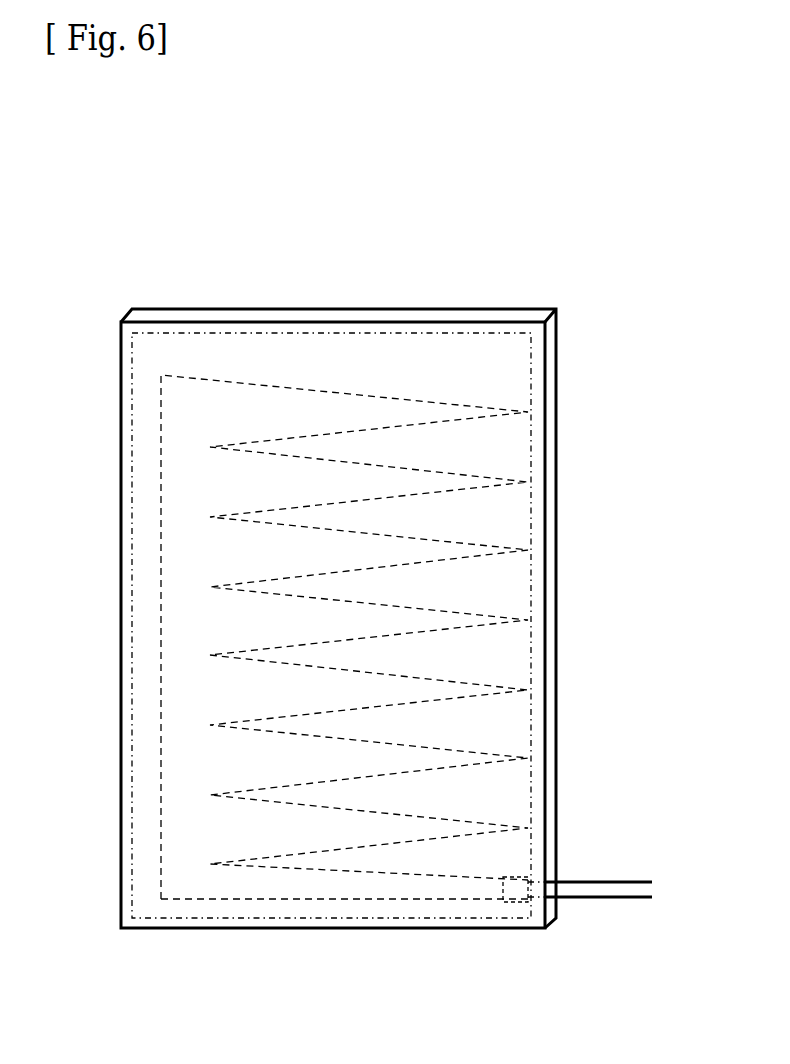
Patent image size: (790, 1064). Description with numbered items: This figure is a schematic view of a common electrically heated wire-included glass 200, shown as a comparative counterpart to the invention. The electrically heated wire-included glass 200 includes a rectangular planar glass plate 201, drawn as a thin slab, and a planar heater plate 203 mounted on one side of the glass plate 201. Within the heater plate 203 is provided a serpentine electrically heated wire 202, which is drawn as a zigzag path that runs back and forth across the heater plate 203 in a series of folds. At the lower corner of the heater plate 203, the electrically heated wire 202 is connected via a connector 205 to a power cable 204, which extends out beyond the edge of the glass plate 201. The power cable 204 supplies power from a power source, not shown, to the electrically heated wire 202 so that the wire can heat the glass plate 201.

The electrically heated wire-included glass 200 is at (567, 244).
The glass plate 201 is at (556, 333).
The electrically heated wire 202 is at (533, 438).
The heater plate 203 is at (558, 529).
The power cable 204 is at (612, 900).
The connector 205 is at (517, 930).